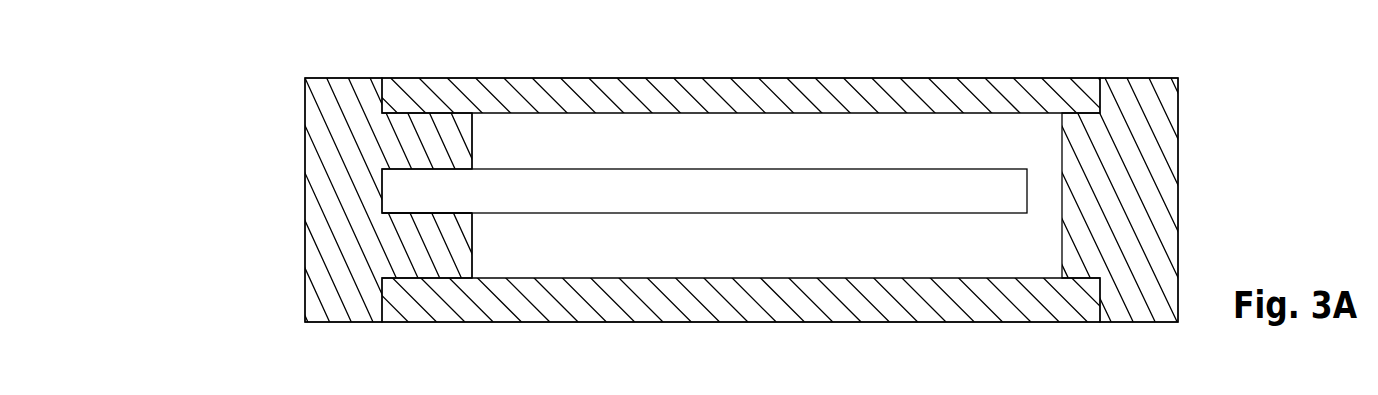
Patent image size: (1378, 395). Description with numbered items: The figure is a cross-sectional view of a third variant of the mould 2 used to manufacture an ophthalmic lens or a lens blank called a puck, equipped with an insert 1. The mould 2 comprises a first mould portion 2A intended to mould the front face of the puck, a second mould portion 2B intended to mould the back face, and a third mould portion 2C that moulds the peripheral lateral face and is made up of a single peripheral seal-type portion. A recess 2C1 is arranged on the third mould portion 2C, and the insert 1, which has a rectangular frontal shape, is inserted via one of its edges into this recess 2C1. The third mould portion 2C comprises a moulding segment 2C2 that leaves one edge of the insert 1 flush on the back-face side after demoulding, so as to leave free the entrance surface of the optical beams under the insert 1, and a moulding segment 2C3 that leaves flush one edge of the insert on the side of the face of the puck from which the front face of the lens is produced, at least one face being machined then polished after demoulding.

The insert 1 is at (673, 177).
The mould 2 is at (1216, 110).
The first mould portion 2A is at (772, 103).
The second mould portion 2B is at (727, 290).
The third mould portion 2C is at (333, 192).
The recess 2C1 is at (423, 215).
The moulding segment 2C2 is at (453, 238).
The moulding segment 2C3 is at (438, 151).